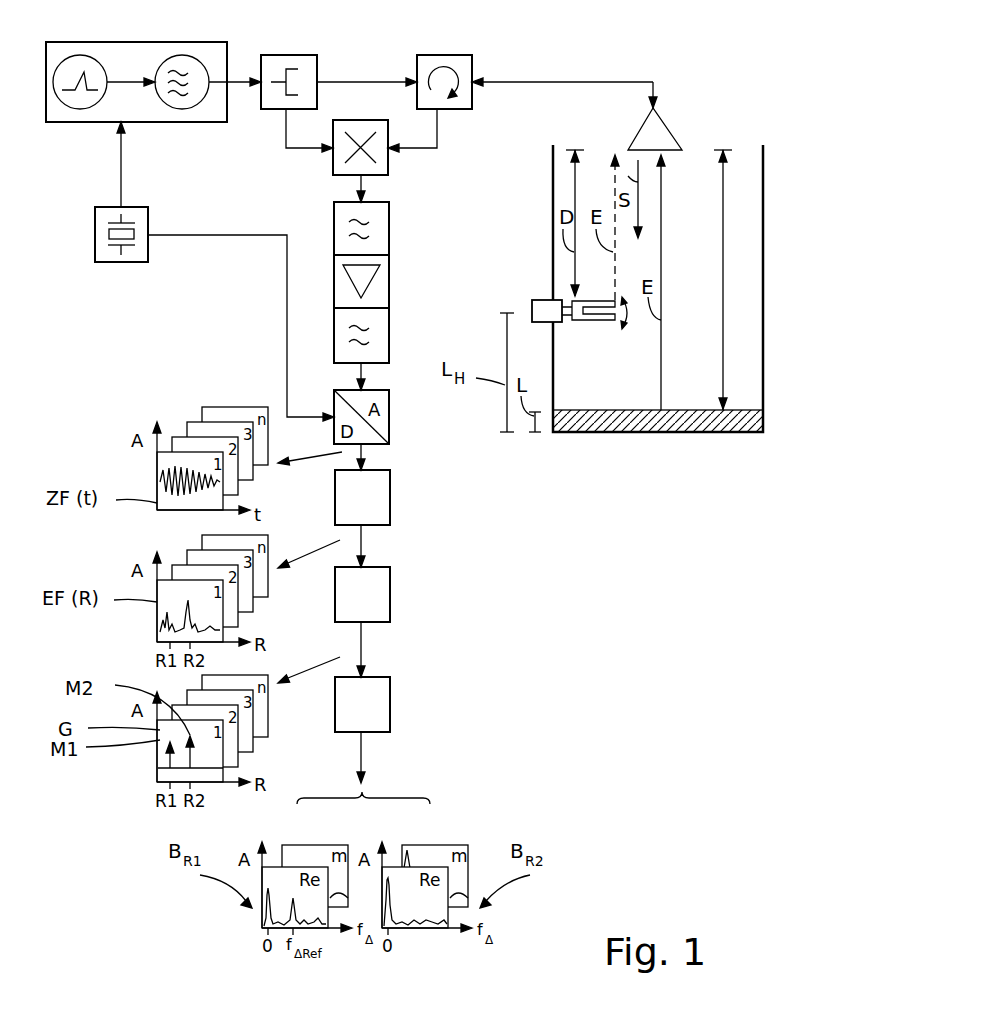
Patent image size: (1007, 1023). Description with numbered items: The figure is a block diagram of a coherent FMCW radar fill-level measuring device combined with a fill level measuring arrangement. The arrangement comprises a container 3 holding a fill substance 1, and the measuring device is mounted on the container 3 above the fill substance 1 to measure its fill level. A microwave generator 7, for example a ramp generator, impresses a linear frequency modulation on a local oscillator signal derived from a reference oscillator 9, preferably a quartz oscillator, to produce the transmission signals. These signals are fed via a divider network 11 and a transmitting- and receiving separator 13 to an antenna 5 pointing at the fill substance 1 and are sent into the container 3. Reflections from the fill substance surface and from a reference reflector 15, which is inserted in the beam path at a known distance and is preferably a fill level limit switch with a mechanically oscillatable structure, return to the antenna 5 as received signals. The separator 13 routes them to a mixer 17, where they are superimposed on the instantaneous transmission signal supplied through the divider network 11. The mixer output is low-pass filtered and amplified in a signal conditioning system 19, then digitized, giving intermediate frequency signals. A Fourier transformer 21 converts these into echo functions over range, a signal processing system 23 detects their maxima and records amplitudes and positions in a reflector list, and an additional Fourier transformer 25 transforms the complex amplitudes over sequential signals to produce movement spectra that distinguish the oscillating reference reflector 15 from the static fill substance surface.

The fill substance 1 is at (720, 424).
The container 3 is at (765, 382).
The antenna 5 is at (658, 135).
The microwave generator 7 is at (61, 124).
The reference oscillator 9 is at (147, 217).
The divider network 11 is at (311, 66).
The transmitting- and receiving separator 13 is at (467, 68).
The reference reflector 15 is at (596, 322).
The mixer 17 is at (380, 162).
The signal conditioning system 19 is at (380, 293).
The Fourier transformer 21 is at (388, 494).
The signal processing system 23 is at (388, 603).
The additional Fourier transformer 25 is at (388, 700).